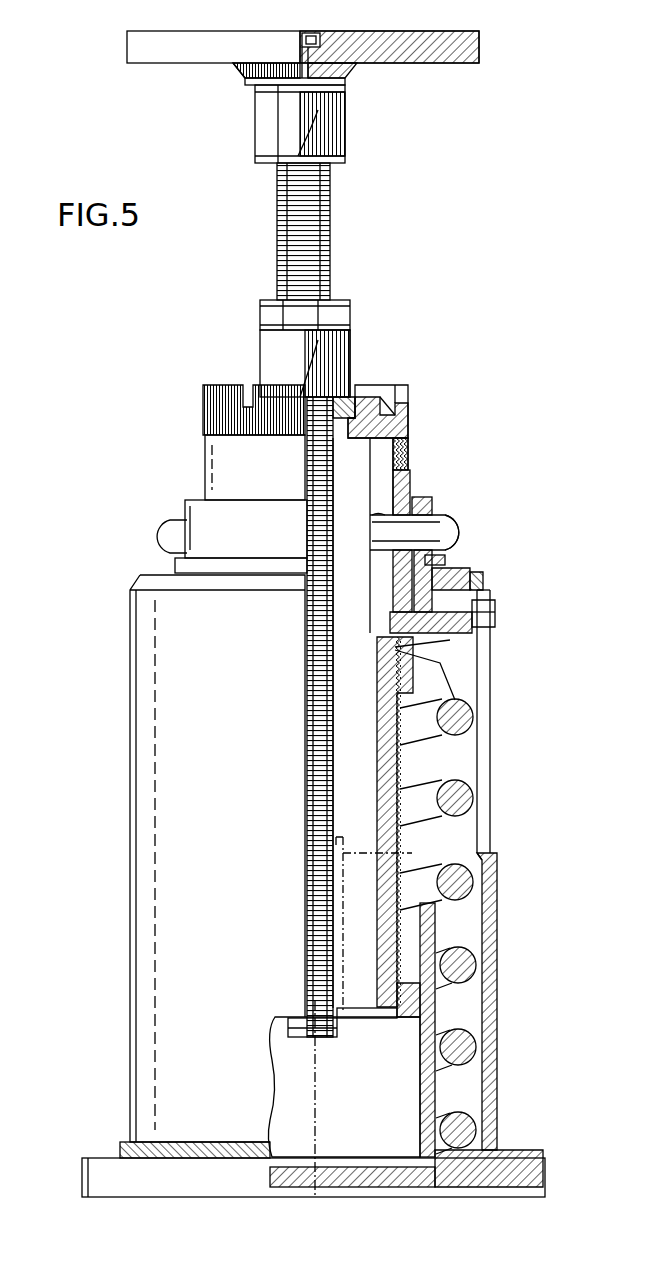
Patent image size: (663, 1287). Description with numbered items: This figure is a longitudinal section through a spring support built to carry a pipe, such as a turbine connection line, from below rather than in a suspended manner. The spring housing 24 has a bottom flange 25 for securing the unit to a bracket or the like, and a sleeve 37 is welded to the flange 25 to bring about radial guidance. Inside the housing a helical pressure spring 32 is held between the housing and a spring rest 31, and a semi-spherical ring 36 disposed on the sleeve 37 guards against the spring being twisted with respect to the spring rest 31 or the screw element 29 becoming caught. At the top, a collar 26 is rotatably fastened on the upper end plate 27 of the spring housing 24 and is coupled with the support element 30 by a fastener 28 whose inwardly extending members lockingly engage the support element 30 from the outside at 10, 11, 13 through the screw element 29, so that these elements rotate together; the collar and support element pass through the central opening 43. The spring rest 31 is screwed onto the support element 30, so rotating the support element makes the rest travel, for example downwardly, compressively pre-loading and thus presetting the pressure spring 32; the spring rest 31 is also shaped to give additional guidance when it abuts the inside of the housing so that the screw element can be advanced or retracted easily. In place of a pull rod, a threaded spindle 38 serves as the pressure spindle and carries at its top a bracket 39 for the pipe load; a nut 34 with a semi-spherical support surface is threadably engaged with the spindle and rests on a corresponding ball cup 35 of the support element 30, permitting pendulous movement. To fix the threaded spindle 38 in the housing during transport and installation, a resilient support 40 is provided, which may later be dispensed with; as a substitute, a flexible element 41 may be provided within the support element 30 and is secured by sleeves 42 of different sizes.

The locking engagement point 10 is at (455, 520).
The locking engagement point 11 is at (372, 517).
The locking engagement point 13 is at (385, 477).
The spring housing 24 is at (490, 1063).
The bottom flange 25 is at (510, 1172).
The collar 26 is at (432, 503).
The upper end plate 27 is at (470, 581).
The fastener 28 is at (455, 536).
The screw element 29 is at (408, 418).
The support element 30 is at (380, 765).
The spring rest 31 is at (470, 627).
The pressure spring 32 is at (400, 708).
The nut 34 is at (315, 339).
The ball cup 35 is at (355, 397).
The semi-spherical ring 36 is at (412, 1000).
The sleeve 37 is at (428, 929).
The threaded spindle 38 is at (330, 198).
The bracket 39 is at (455, 47).
The resilient support 40 is at (318, 1155).
The flexible element 41 is at (372, 1018).
The sleeves 42 is at (391, 923).
The central opening 43 is at (445, 568).